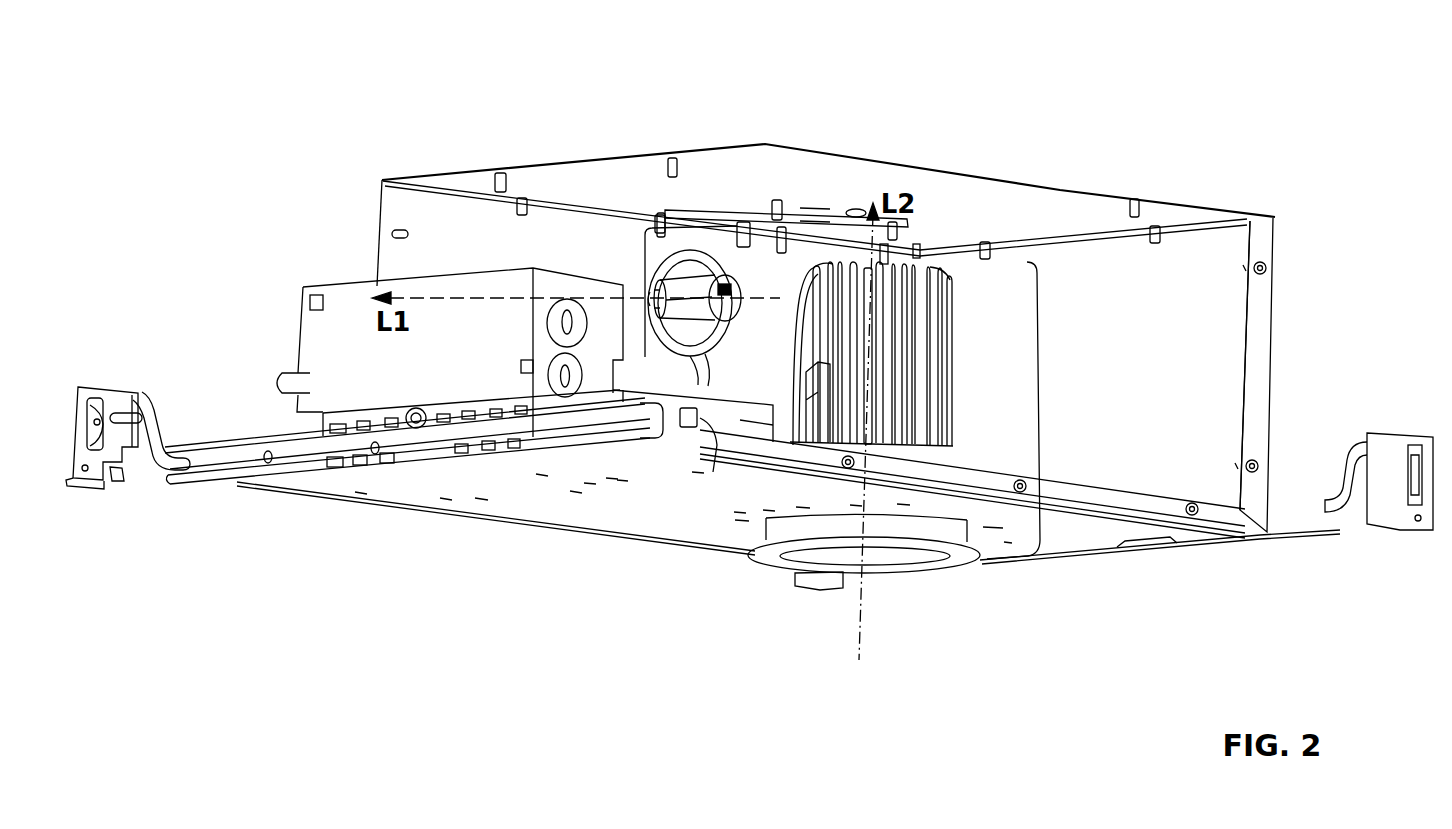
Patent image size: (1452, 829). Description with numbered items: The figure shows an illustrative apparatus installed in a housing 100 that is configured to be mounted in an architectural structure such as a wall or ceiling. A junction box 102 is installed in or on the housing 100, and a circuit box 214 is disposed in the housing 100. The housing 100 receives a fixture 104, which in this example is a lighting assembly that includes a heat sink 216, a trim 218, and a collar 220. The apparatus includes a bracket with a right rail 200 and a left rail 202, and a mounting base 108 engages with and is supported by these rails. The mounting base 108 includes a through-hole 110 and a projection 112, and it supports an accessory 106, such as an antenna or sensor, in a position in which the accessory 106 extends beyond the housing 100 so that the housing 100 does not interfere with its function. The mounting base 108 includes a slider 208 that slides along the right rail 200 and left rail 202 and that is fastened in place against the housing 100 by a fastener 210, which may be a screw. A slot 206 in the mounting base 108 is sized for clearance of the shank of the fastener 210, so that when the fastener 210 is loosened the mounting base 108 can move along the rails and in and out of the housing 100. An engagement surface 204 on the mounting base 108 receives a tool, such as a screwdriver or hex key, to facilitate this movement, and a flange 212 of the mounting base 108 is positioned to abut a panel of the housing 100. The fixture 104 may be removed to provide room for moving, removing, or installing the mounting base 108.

The housing 100 is at (1093, 523).
The junction box 102 is at (542, 398).
The fixture 104 is at (1038, 398).
The accessory 106 is at (655, 260).
The mounting base 108 is at (672, 248).
The through-hole 110 is at (705, 285).
The projection 112 is at (700, 358).
The right rail 200 is at (918, 216).
The left rail 202 is at (778, 205).
The engagement surface 204 is at (745, 218).
The slot 206 is at (810, 208).
The slider 208 is at (856, 212).
The fastener 210 is at (880, 205).
The flange 212 is at (655, 290).
The circuit box 214 is at (700, 420).
The heat sink 216 is at (935, 290).
The trim 218 is at (962, 565).
The collar 220 is at (952, 568).